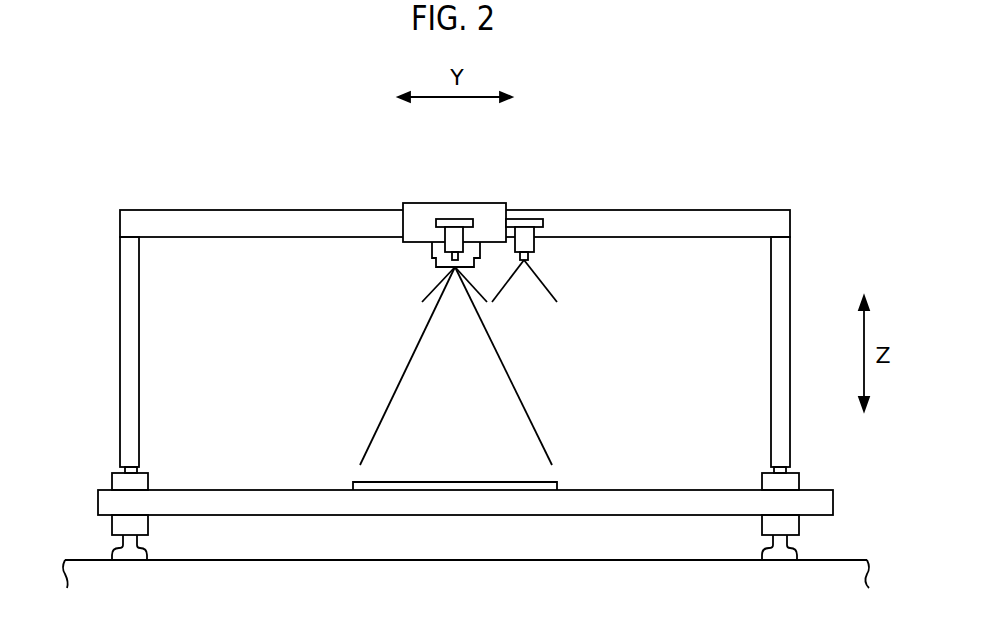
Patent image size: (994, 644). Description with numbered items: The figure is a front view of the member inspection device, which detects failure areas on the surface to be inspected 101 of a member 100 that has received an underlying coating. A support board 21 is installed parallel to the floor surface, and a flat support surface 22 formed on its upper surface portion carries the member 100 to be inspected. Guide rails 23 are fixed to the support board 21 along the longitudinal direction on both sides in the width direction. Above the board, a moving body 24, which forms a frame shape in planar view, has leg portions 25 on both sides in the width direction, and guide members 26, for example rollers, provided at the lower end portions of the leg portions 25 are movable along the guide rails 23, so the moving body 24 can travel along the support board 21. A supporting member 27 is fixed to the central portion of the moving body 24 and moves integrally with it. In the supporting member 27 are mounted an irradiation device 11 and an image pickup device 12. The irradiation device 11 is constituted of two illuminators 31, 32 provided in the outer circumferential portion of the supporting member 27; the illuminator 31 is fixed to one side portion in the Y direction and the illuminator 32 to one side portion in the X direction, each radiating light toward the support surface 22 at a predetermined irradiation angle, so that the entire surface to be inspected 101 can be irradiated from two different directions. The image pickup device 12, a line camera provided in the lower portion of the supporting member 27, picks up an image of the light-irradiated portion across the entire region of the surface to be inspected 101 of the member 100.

The irradiation device 11 is at (517, 128).
The image pickup device 12 is at (421, 257).
The support board 21 is at (843, 500).
The support surface 22 is at (234, 490).
The guide rails 23 is at (110, 483).
The moving body 24 is at (205, 200).
The leg portions 25 is at (120, 258).
The guide members 26 is at (137, 473).
The supporting member 27 is at (420, 203).
The illuminator 31 is at (534, 243).
The illuminator 32 is at (463, 235).
The member 100 is at (560, 477).
The surface to be inspected 101 is at (457, 490).